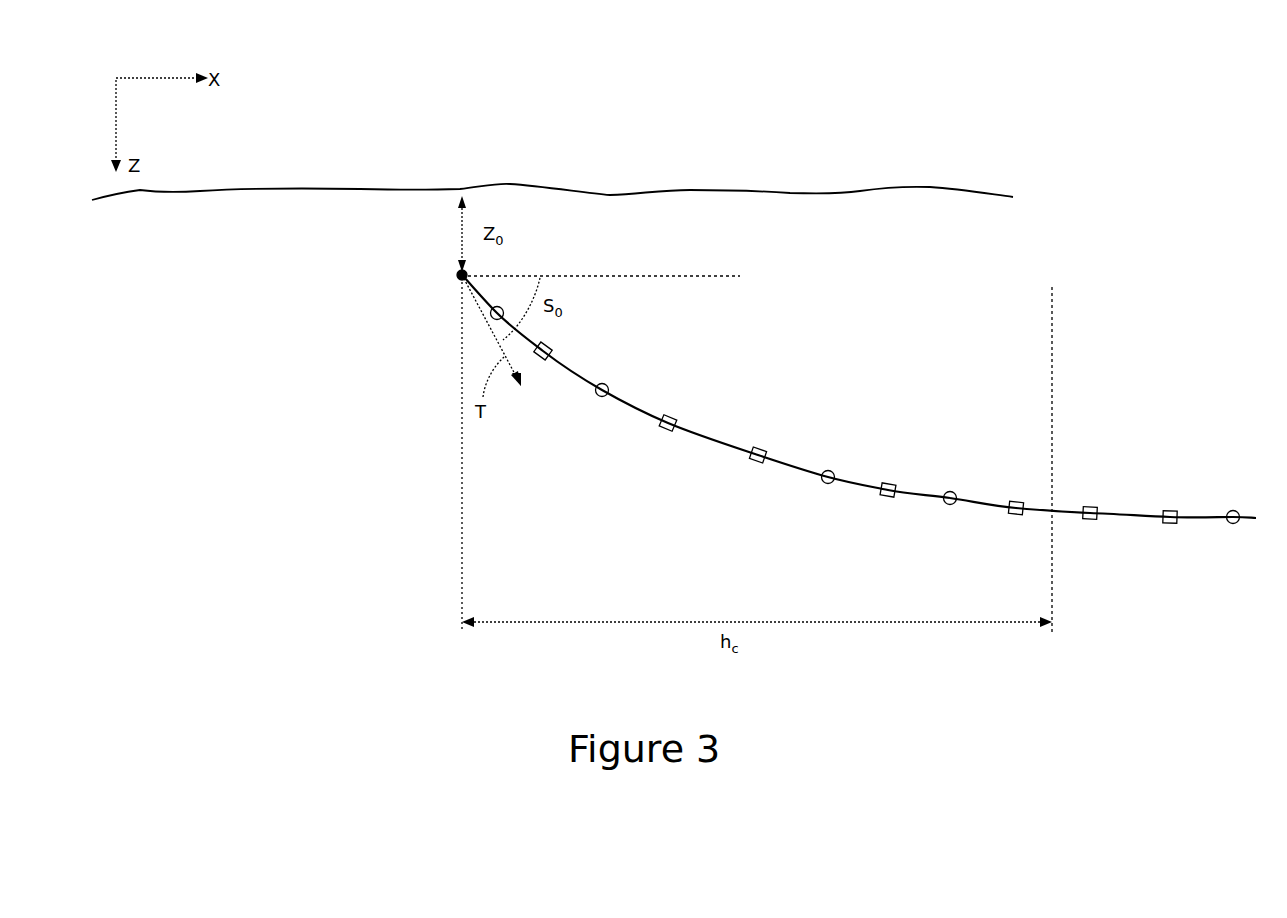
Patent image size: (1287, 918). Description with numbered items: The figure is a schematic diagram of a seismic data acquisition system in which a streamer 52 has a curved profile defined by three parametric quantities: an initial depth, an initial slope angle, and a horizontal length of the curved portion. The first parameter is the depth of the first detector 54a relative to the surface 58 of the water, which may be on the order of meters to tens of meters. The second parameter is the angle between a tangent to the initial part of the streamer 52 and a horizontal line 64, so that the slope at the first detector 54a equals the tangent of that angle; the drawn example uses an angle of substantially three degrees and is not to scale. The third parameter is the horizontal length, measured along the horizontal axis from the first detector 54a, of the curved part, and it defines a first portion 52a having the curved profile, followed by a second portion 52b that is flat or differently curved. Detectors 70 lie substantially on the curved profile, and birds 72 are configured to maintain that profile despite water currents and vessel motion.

The streamer 52 is at (859, 396).
The first portion 52a is at (700, 433).
The second portion 52b is at (1130, 511).
The first detector 54a is at (456, 275).
The surface 58 is at (682, 188).
The horizontal line 64 is at (672, 276).
The detectors 70 is at (553, 348).
The birds 72 is at (610, 384).